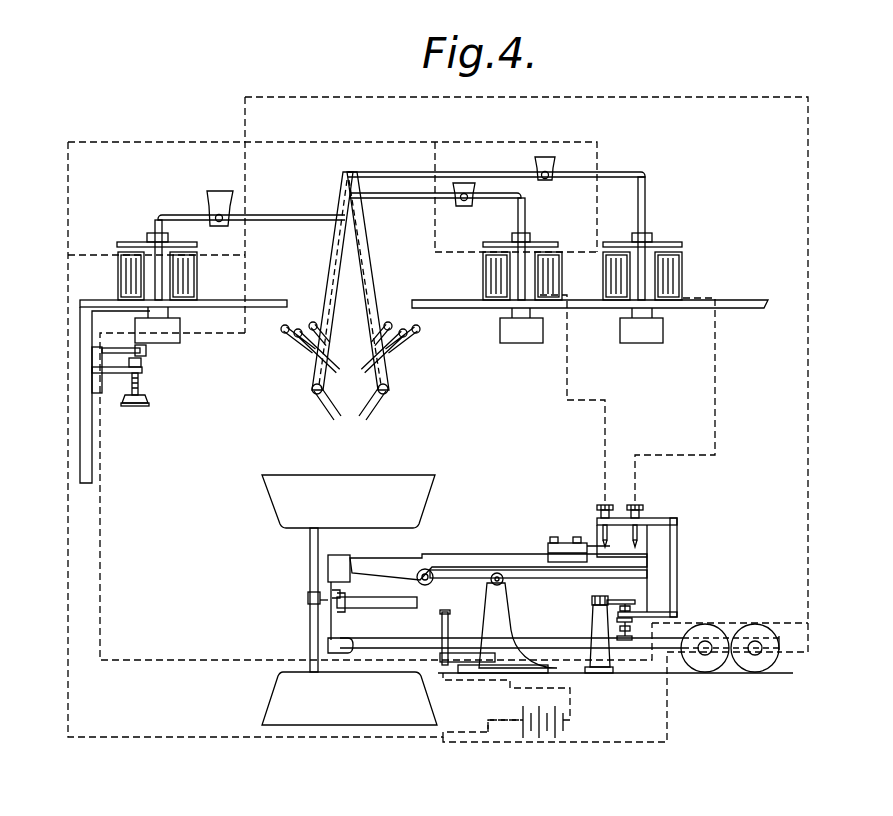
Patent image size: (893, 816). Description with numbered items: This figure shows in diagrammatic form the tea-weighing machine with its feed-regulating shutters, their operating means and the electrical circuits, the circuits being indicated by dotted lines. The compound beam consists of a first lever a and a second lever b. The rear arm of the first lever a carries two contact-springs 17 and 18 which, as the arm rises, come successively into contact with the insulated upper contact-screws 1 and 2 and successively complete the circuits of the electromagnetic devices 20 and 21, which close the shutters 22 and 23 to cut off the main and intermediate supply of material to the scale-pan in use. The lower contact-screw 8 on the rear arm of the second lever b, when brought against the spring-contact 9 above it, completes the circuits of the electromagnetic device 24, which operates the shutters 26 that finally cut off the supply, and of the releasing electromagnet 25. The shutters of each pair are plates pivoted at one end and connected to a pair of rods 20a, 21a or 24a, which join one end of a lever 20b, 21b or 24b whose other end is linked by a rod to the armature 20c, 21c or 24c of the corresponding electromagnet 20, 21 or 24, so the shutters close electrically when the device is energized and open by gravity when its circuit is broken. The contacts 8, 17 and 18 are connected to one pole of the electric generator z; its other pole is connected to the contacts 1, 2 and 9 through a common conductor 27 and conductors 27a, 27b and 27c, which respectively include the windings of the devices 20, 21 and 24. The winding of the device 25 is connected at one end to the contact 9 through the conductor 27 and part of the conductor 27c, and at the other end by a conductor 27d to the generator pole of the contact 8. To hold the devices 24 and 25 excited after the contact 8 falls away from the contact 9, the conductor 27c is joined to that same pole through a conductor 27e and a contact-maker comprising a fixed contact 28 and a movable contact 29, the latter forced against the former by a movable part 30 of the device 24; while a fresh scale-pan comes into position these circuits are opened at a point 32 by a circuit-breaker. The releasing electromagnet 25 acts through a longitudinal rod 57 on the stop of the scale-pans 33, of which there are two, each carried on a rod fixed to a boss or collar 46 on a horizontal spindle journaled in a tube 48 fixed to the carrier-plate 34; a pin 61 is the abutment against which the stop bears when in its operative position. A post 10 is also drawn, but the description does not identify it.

The upper contact-screw 1 is at (644, 506).
The upper contact-screw 2 is at (596, 506).
The lower contact-screw 8 is at (632, 608).
The spring-contact 9 is at (613, 602).
The standard 10 is at (592, 622).
The contact-spring 17 is at (637, 567).
The contact-spring 18 is at (602, 543).
The electromagnetic device 20 is at (683, 274).
The rods 20a is at (620, 163).
The lever 20b is at (646, 204).
The armature 20c is at (651, 244).
The electromagnetic device 21 is at (483, 277).
The rods 21a is at (517, 199).
The lever 21b is at (526, 214).
The armature 21c is at (548, 234).
The shutters 22 is at (360, 342).
The shutters 23 is at (350, 283).
The electromagnetic device 24 is at (118, 276).
The rods 24a is at (309, 221).
The lever 24b is at (154, 229).
The armature 24c is at (162, 235).
The releasing-electromagnet 25 is at (722, 668).
The shutters 26 is at (362, 420).
The common conductor 27 is at (232, 748).
The conductor 27a is at (601, 200).
The conductor 27b is at (435, 214).
The conductor 27c is at (738, 622).
The conductor 27d is at (667, 742).
The conductor 27e is at (101, 524).
The fixed contact 28 is at (143, 388).
The movable contact 29 is at (143, 357).
The movable part 30 is at (178, 341).
The point 32 is at (445, 674).
The scale-pans 33 is at (349, 600).
The carrier-plate 34 is at (334, 612).
The boss or collar 46 is at (307, 603).
The tube 48 is at (405, 608).
The longitudinal rod 57 is at (557, 643).
The pin 61 is at (458, 636).
The first lever a is at (393, 566).
The second lever b is at (543, 580).
The pawl m is at (518, 620).
The electric generator z is at (533, 738).